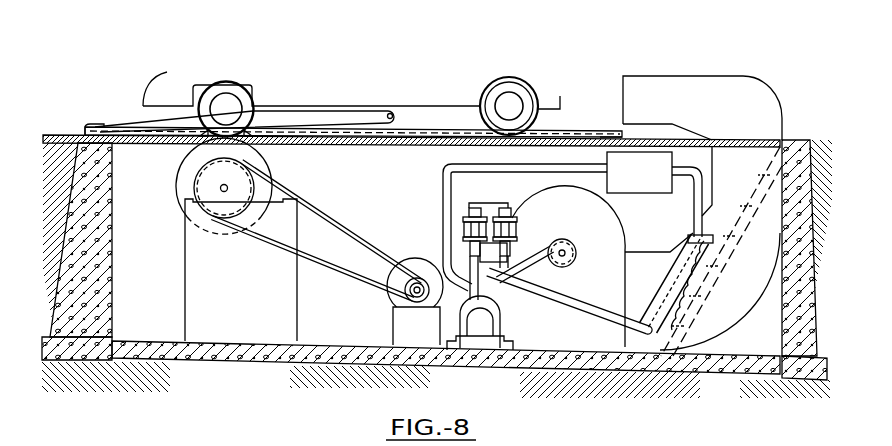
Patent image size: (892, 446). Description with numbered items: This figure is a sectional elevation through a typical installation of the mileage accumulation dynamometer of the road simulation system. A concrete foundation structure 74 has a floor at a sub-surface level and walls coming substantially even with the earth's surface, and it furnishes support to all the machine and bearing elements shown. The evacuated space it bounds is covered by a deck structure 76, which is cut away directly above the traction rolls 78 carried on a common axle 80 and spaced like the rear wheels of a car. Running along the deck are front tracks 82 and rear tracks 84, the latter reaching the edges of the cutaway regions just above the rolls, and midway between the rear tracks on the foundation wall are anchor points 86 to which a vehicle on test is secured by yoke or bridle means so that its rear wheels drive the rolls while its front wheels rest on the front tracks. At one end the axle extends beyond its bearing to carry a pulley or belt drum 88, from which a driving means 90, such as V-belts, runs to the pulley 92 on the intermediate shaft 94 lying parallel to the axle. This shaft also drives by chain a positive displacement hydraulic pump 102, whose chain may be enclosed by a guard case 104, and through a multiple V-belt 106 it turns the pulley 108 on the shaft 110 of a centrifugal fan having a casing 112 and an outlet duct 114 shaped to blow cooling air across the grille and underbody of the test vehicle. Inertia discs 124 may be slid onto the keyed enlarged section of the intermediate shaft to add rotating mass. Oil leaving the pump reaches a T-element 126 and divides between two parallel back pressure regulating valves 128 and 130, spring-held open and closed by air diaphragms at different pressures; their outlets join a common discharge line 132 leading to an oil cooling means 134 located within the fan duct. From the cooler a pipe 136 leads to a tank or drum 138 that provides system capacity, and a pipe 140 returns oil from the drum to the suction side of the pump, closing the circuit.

The concrete foundation structure 74 is at (100, 258).
The deck structure 76 is at (380, 145).
The traction rolls 78 is at (182, 177).
The common axle 80 is at (218, 188).
The front tracks 82 is at (567, 132).
The rear tracks 84 is at (132, 128).
The anchor points 86 is at (97, 128).
The pulley or belt drum 88 is at (213, 202).
The driving means 90 is at (320, 212).
The pulley 92 is at (416, 301).
The intermediate shaft 94 is at (410, 297).
The positive displacement hydraulic pump 102 is at (490, 322).
The guard case 104 is at (497, 313).
The multiple V-belt 106 is at (522, 278).
The pulley 108 is at (563, 246).
The fan shaft 110 is at (566, 254).
The fan casing 112 is at (613, 238).
The outlet duct 114 is at (657, 88).
The inertia discs 124 is at (410, 293).
The T-element 126 is at (478, 262).
The back pressure regulating valve 128 is at (517, 218).
The back pressure regulating valve 130 is at (463, 218).
The common discharge line 132 is at (593, 298).
The oil cooling means 134 is at (673, 260).
The pipe 136 is at (697, 210).
The tank or drum 138 is at (652, 185).
The pipe 140 is at (443, 183).